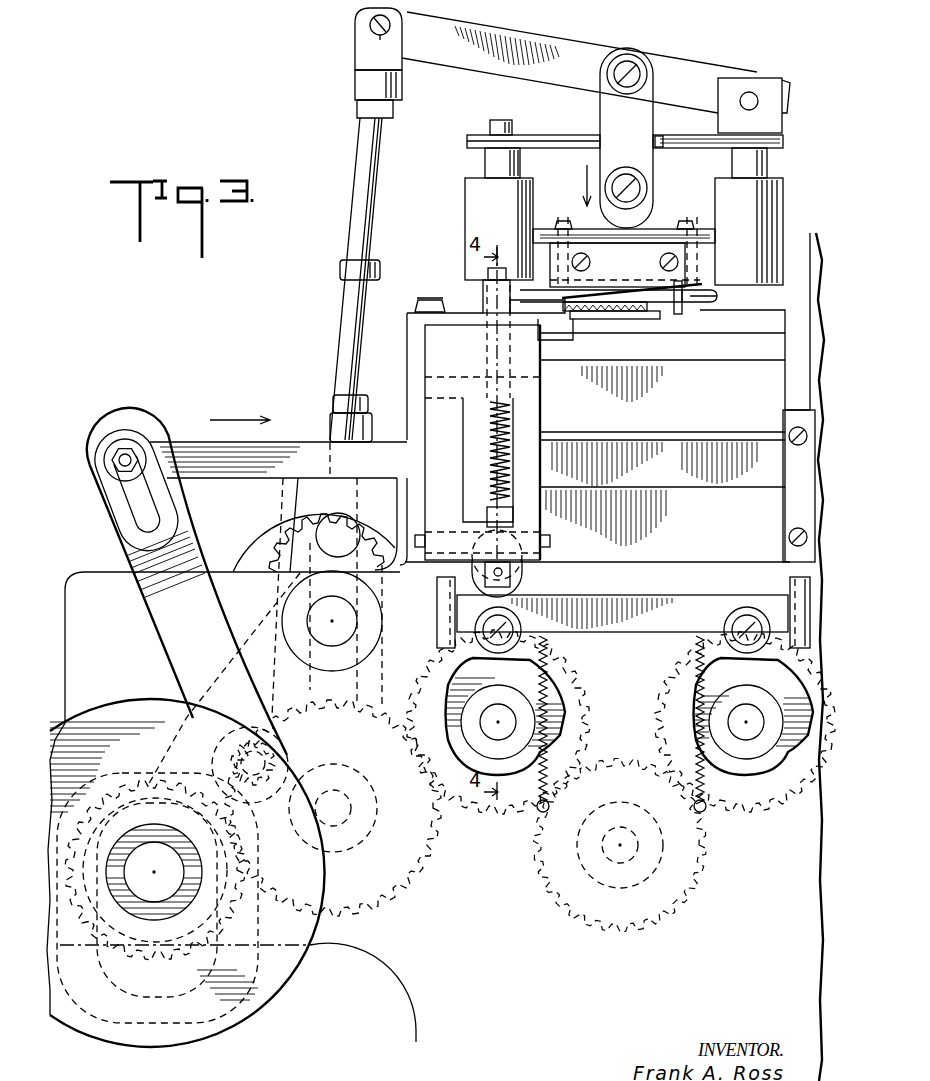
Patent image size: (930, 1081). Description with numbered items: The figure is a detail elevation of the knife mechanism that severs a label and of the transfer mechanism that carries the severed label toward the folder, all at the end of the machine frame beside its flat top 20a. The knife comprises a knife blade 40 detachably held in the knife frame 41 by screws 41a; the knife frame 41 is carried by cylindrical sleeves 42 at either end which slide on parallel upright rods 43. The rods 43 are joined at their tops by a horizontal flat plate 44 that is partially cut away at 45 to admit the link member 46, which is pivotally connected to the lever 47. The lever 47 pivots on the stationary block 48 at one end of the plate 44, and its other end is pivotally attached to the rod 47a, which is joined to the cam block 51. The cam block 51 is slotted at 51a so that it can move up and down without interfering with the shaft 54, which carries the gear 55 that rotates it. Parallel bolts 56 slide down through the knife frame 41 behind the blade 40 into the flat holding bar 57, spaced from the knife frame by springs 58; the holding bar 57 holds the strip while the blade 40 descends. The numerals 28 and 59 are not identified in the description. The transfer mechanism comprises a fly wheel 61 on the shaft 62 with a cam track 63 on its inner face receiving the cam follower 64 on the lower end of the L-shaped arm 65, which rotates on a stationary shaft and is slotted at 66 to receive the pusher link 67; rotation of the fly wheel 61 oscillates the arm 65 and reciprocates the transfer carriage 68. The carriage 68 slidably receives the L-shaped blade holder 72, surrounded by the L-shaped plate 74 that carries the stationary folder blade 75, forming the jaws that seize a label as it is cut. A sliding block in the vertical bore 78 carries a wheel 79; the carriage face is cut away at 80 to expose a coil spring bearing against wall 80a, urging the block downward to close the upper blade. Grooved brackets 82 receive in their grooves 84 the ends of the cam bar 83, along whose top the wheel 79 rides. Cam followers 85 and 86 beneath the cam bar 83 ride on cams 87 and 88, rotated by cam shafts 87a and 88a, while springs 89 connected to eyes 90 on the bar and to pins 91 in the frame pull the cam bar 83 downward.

The flat top 20a is at (770, 312).
The knife blade 28 is at (617, 291).
The knife blade 40 is at (629, 306).
The knife frame 41 is at (661, 240).
The screws 41a is at (592, 262).
The cylindrical sleeves 42 is at (780, 210).
The parallel upright rods 43 is at (770, 160).
The horizontal flat plate 44 is at (476, 140).
The cut-away portion 45 is at (662, 148).
The link member 46 is at (611, 120).
The lever 47 is at (688, 76).
The rod 47a is at (356, 238).
The stationary block 48 is at (772, 88).
The cam block 51 is at (300, 498).
The slot 51a is at (340, 520).
The shaft 54 is at (320, 613).
The gear 55 is at (284, 556).
The parallel bolts 56 is at (553, 224).
The flat holding bar 57 is at (712, 304).
The springs 58 is at (676, 283).
The tab 59 is at (678, 316).
The fly wheel 61 is at (278, 988).
The shaft 62 is at (153, 884).
The cam track 63 is at (115, 1005).
The cam follower 64 is at (148, 785).
The L-shaped arm 65 is at (172, 620).
The slot 66 is at (128, 501).
The pusher link 67 is at (181, 445).
The transfer carriage 68 is at (432, 412).
The L-shaped blade holder 72 is at (478, 295).
The L-shaped plate 74 is at (578, 321).
The stationary folder blade 75 is at (608, 314).
The vertical bore 78 is at (515, 531).
The wheel 79 is at (524, 576).
The cut-away portion 80 is at (474, 444).
The wall 80a is at (472, 400).
The grooved brackets 82 is at (446, 603).
The cam bar 83 is at (660, 610).
The grooves 84 is at (790, 582).
The cam follower 85 is at (515, 625).
The cam follower 86 is at (742, 612).
The cam 87 is at (548, 691).
The cam shaft 87a is at (512, 722).
The cam 88 is at (793, 732).
The cam shaft 88a is at (748, 732).
The springs 89 is at (695, 762).
The eyes 90 is at (548, 636).
The pins 91 is at (540, 811).